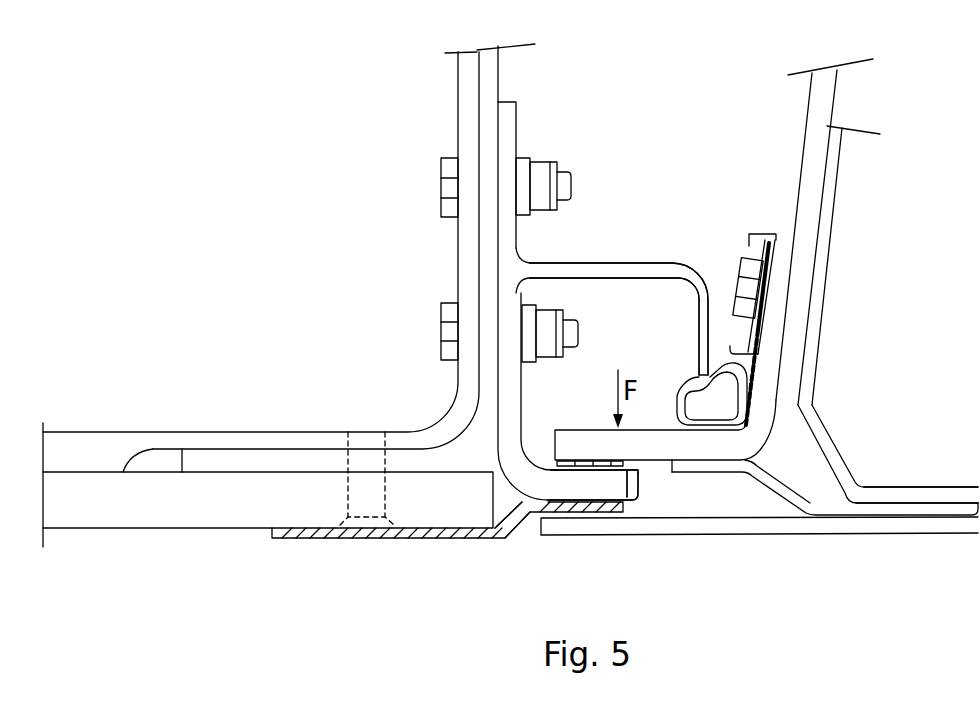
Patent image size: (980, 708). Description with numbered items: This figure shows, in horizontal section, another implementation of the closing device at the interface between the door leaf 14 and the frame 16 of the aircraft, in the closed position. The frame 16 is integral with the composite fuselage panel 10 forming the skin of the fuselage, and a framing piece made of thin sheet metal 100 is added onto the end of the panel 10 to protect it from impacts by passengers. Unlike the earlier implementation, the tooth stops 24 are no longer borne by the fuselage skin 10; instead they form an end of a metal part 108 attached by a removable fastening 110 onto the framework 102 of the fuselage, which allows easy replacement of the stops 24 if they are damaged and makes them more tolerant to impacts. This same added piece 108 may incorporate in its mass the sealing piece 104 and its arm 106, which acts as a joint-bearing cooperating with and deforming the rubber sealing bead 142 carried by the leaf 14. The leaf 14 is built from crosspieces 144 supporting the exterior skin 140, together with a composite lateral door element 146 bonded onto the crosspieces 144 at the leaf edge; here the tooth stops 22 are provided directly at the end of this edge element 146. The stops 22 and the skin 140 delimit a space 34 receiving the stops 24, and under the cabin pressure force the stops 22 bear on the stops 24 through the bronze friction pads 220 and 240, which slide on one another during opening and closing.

The fuselage panel 10 is at (140, 518).
The framing piece made of thin sheet metal 100 is at (309, 538).
The framework 102 is at (478, 70).
The sealing piece 104 is at (560, 242).
The arm 106 is at (671, 266).
The metal part 108 is at (512, 113).
The removable fastening 110 is at (450, 176).
The leaf 14 is at (797, 580).
The skin 140 is at (703, 536).
The sealing bead 142 is at (678, 392).
The crosspieces 144 is at (818, 452).
The lateral door element 146 is at (788, 289).
The frame 16 is at (500, 578).
The tooth stops 22 is at (593, 438).
The friction pad 220 is at (640, 478).
The tooth stops 24 is at (574, 488).
The friction pad 240 is at (545, 455).
The space 34 is at (751, 500).